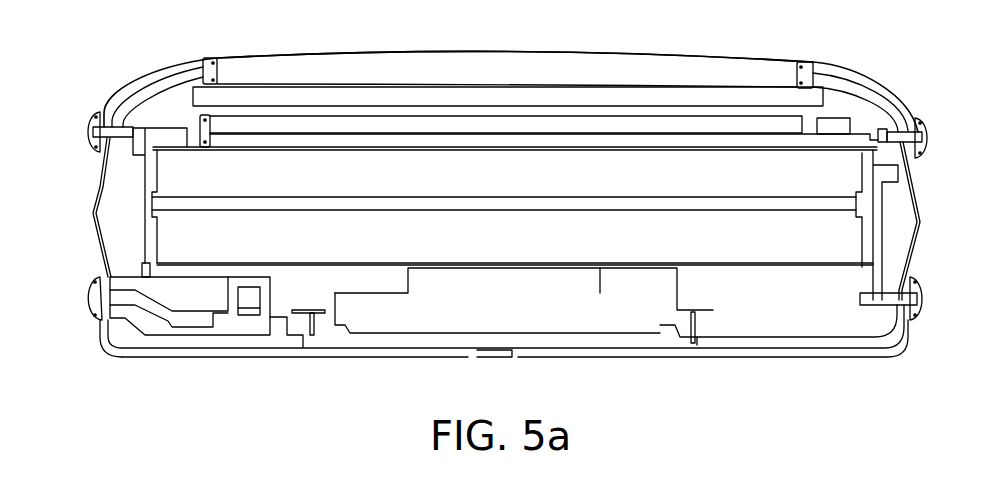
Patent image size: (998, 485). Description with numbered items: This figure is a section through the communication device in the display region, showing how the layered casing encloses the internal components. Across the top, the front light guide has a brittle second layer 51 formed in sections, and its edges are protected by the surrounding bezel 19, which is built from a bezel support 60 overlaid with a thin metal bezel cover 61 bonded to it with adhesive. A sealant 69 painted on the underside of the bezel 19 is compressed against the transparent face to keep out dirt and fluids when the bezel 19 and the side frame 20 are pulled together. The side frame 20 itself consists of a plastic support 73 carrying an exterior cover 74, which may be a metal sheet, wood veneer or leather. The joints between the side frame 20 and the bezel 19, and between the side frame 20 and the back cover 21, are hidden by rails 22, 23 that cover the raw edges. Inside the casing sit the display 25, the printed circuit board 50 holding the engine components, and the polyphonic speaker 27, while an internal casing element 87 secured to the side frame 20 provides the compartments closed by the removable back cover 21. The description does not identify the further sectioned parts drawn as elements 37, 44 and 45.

The bezel 19 is at (883, 105).
The side frame 20 is at (136, 266).
The back cover 21 is at (293, 357).
The rail 22 is at (927, 135).
The rail 23 is at (923, 300).
The display 25 is at (563, 123).
The polyphonic speaker 27 is at (447, 318).
The inner cover layer 37 is at (812, 103).
The bracket 44 is at (847, 132).
The plate 45 is at (280, 105).
The printed circuit board 50 is at (430, 200).
The second layer of the composite light guide 51 is at (762, 63).
The bezel support 60 is at (137, 107).
The bezel cover 61 is at (180, 72).
The sealant 69 is at (204, 61).
The plastic support 73 is at (117, 173).
The exterior cover 74 is at (88, 218).
The internal casing element 87 is at (122, 337).